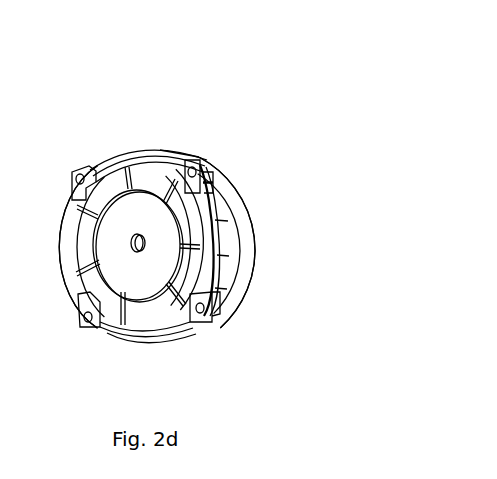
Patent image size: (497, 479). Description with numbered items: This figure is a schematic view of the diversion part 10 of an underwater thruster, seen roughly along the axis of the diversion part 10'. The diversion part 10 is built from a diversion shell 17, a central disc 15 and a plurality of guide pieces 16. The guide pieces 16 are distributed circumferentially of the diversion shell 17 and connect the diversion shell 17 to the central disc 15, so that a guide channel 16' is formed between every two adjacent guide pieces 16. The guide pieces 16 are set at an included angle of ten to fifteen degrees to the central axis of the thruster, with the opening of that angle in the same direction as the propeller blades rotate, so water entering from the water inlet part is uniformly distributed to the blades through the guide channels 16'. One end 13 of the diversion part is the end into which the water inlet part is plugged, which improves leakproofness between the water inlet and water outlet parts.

The diversion part 10 is at (159, 212).
The axis of diversion part 10' is at (215, 284).
The one end of diversion part 13 is at (234, 203).
The central disc 15 is at (137, 273).
The guide piece 16 is at (138, 276).
The guide channel 16' is at (106, 247).
The diversion shell 17 is at (148, 153).